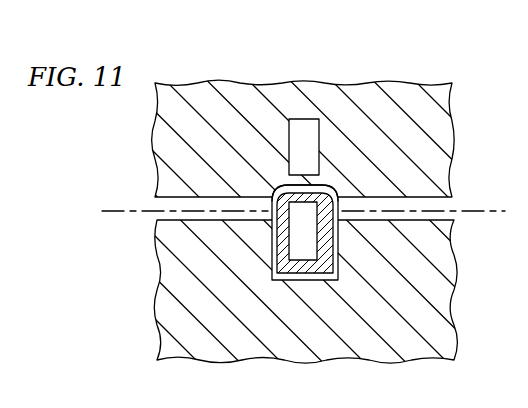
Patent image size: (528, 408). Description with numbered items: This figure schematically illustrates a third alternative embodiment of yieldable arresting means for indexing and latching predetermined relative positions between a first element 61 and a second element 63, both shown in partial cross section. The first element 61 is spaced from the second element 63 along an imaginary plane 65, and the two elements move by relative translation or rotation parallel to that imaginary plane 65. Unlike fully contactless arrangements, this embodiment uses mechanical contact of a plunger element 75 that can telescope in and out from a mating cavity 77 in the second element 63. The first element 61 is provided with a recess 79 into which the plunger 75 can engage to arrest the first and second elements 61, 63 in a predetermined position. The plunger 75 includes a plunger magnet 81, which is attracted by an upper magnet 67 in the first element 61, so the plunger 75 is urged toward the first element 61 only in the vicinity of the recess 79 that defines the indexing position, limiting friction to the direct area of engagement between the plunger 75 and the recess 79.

The first element 61 is at (445, 142).
The second element 63 is at (443, 260).
The imaginary plane 65 is at (487, 211).
The upper magnet 67 is at (303, 144).
The plunger element 75 is at (282, 258).
The mating cavity 77 is at (300, 275).
The recess 79 is at (332, 188).
The plunger magnet 81 is at (298, 229).